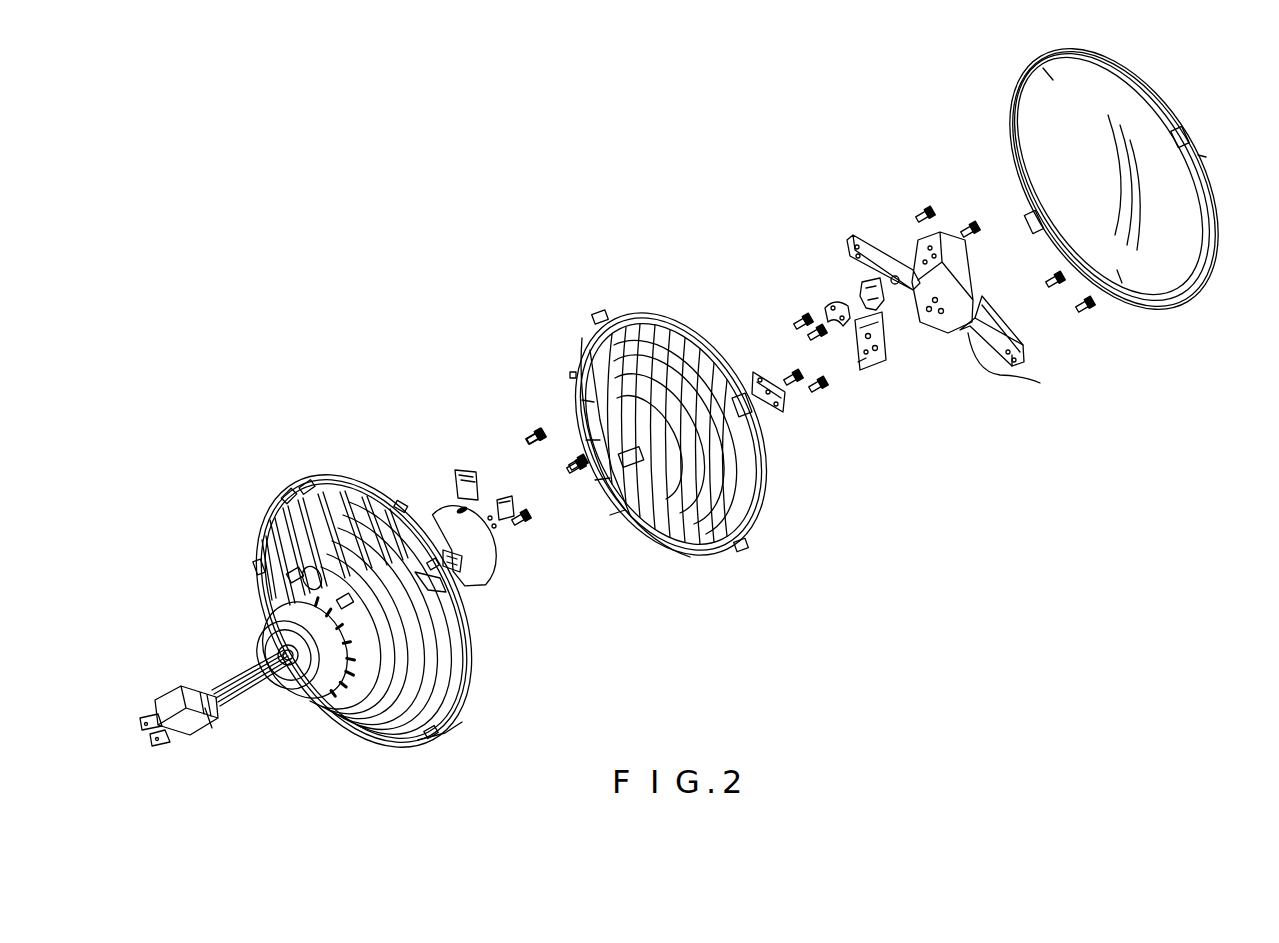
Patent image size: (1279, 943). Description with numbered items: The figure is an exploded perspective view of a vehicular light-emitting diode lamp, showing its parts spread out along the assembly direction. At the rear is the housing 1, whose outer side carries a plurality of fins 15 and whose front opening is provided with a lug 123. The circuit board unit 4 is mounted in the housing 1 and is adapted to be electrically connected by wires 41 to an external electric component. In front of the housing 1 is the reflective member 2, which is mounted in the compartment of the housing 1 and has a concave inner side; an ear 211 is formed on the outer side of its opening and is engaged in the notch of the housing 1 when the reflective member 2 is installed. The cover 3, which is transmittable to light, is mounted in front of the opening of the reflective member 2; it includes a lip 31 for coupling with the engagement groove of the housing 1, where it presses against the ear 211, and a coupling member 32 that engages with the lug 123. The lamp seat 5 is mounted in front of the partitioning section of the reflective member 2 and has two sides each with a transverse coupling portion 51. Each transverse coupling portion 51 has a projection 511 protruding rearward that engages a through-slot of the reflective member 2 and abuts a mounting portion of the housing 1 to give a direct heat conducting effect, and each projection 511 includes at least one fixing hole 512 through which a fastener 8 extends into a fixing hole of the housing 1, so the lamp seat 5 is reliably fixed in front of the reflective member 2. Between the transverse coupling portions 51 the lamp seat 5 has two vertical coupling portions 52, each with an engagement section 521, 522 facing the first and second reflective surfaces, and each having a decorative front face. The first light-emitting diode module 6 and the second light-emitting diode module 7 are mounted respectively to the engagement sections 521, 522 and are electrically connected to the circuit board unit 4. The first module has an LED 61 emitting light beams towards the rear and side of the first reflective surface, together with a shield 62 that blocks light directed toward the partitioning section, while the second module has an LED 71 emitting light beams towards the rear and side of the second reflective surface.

The housing 1 is at (275, 485).
The fins 15 is at (437, 730).
The lug 123 is at (440, 578).
The wires 41 is at (243, 697).
The circuit board unit 4 is at (503, 562).
The reflective member 2 is at (605, 286).
The ear 211 is at (595, 320).
The cover 3 is at (1175, 107).
The lip 31 is at (1012, 102).
The coupling member 32 is at (1185, 136).
The lamp seat 5 is at (967, 278).
The transverse coupling portion 51 is at (1026, 332).
The projection 511 is at (992, 337).
The fixing hole 512 is at (1037, 384).
The vertical coupling portion 52 is at (911, 278).
The engagement section 521 is at (933, 230).
The engagement section 522 is at (935, 317).
The first light-emitting diode module 6 is at (800, 261).
The LED 61 is at (860, 290).
The shield 62 is at (862, 293).
The second light-emitting diode module 7 is at (867, 382).
The LED 71 is at (858, 368).
The fastener 8 is at (813, 317).